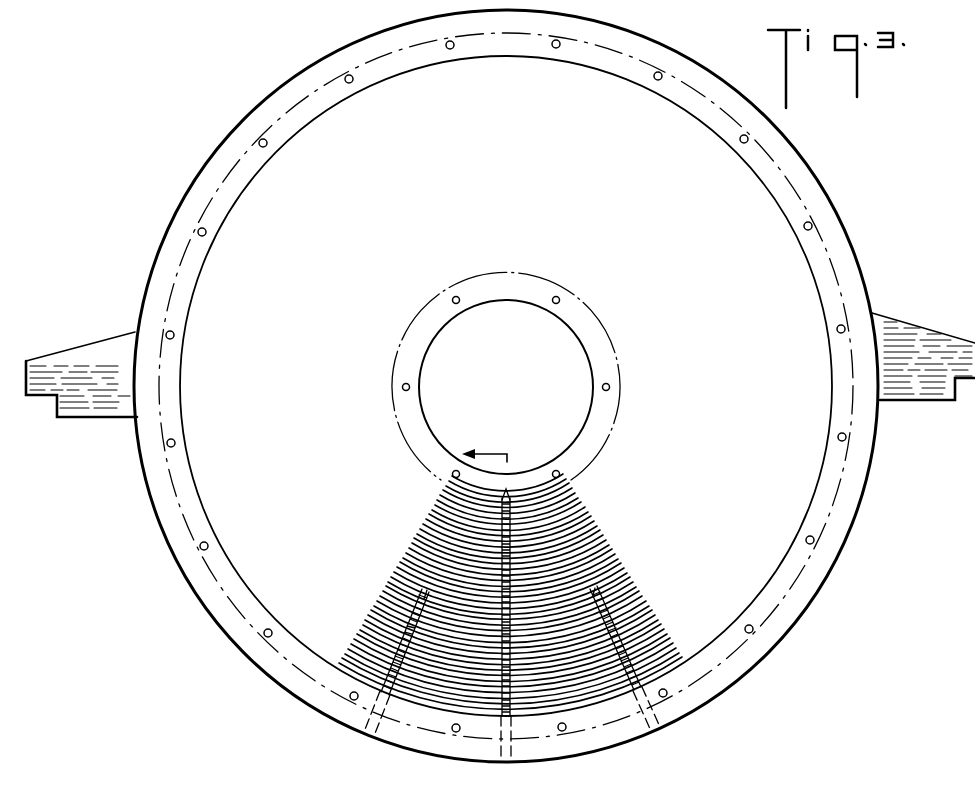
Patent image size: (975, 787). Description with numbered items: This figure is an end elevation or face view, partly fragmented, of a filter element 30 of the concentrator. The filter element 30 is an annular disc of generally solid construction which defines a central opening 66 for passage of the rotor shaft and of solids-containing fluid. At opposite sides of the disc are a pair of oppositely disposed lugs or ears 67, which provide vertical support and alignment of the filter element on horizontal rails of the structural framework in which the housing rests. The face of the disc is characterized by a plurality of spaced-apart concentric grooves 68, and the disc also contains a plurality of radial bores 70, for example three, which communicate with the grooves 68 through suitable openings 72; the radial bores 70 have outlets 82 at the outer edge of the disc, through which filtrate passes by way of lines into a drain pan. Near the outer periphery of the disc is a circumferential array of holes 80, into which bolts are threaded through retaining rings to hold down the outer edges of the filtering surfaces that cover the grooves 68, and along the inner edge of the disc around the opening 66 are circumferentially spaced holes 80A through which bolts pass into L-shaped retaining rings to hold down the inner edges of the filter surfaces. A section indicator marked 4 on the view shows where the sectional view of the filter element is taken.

The filter element 30 is at (478, 146).
The opening 66 is at (497, 313).
The lugs or ears 67 is at (58, 362).
The concentric grooves 68 is at (430, 542).
The radial bores 70 is at (520, 498).
The openings 72 is at (503, 510).
The holes 80 is at (805, 229).
The holes 80A is at (559, 297).
The outlets 82 is at (664, 728).
The section line for FIG. 4 is at (494, 455).